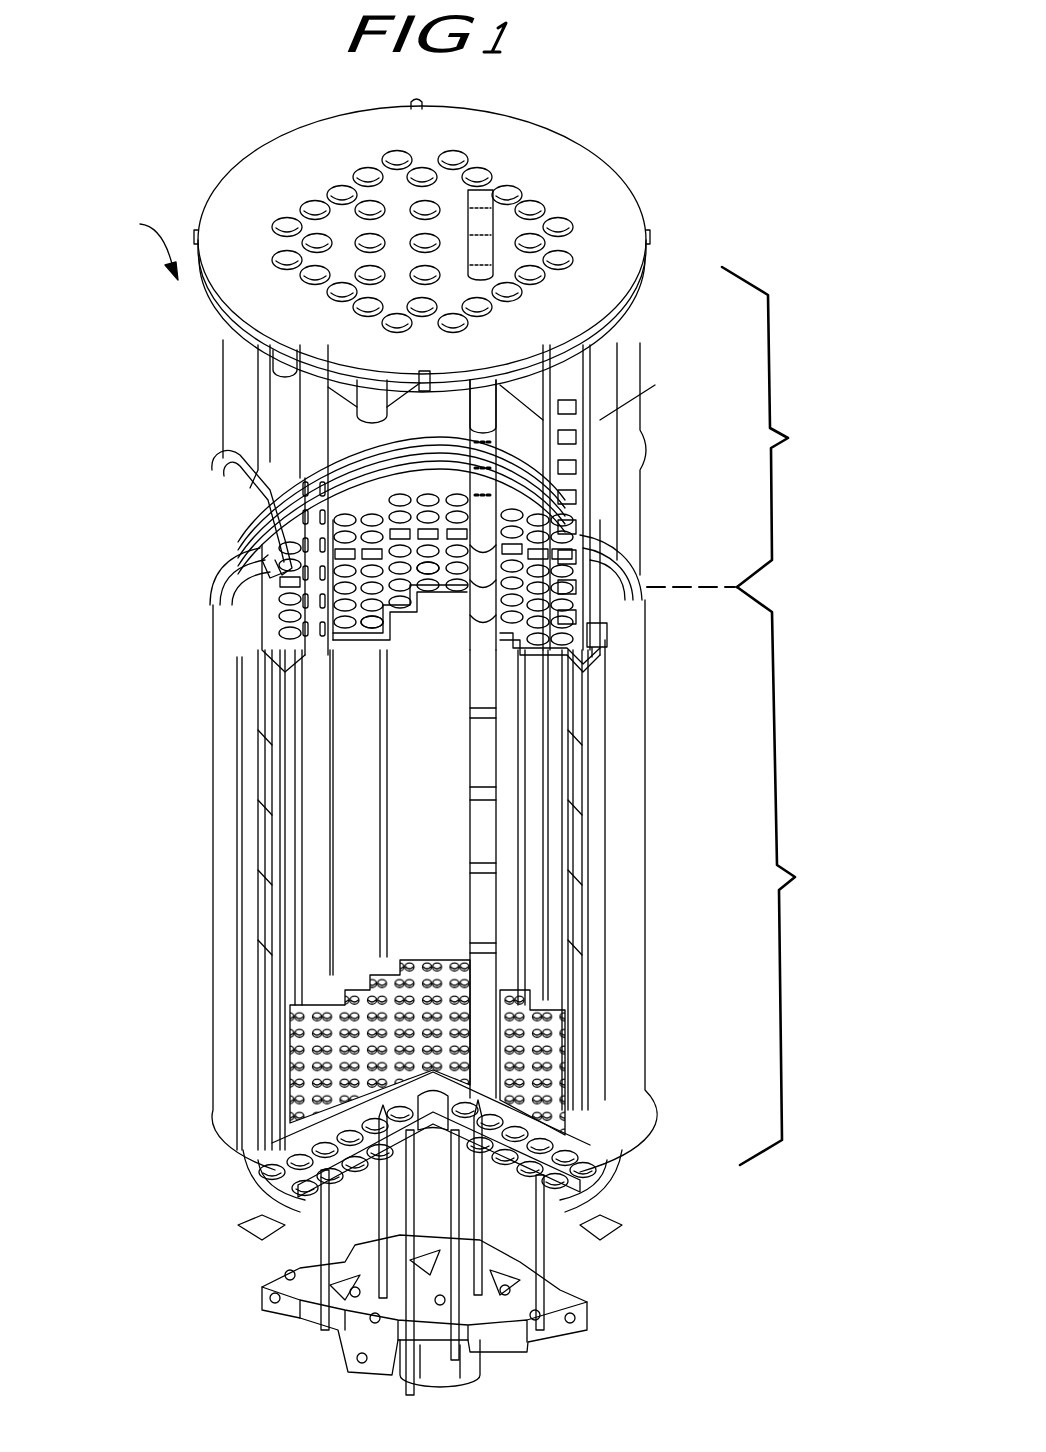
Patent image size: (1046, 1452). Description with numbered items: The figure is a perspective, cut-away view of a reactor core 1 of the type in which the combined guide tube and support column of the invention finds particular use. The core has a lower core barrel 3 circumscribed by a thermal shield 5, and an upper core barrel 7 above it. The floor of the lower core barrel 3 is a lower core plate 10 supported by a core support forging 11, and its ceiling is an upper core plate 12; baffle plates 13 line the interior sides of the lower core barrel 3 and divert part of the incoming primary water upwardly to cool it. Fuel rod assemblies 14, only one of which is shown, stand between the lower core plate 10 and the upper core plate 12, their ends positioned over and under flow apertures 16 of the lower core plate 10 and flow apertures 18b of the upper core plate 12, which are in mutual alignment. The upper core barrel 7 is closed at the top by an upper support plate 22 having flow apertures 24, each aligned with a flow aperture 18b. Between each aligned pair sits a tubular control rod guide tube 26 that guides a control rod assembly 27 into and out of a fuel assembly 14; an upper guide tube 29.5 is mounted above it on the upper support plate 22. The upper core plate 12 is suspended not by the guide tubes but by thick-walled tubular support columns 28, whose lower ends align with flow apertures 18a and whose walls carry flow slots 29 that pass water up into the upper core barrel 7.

The reactor core 1 is at (147, 246).
The upper support plate 22 is at (612, 218).
The flow apertures 24 is at (558, 232).
The upper guide tube 29.5 is at (487, 230).
The support columns 28 is at (565, 400).
The control rod guide tube 26 is at (470, 452).
The control rod assembly 27 is at (538, 532).
The flow apertures 18a is at (377, 628).
The flow apertures 18b is at (428, 575).
The flow slots 29 is at (270, 520).
The upper core plate 12 is at (570, 660).
The thermal shield 5 is at (632, 870).
The baffle plates 13 is at (438, 783).
The fuel rod assemblies 14 is at (466, 872).
The flow apertures 16 is at (568, 1047).
The lower core plate 10 is at (575, 1120).
The core support forging 11 is at (600, 1188).
The upper core barrel 7 is at (765, 427).
The lower core barrel 3 is at (731, 876).